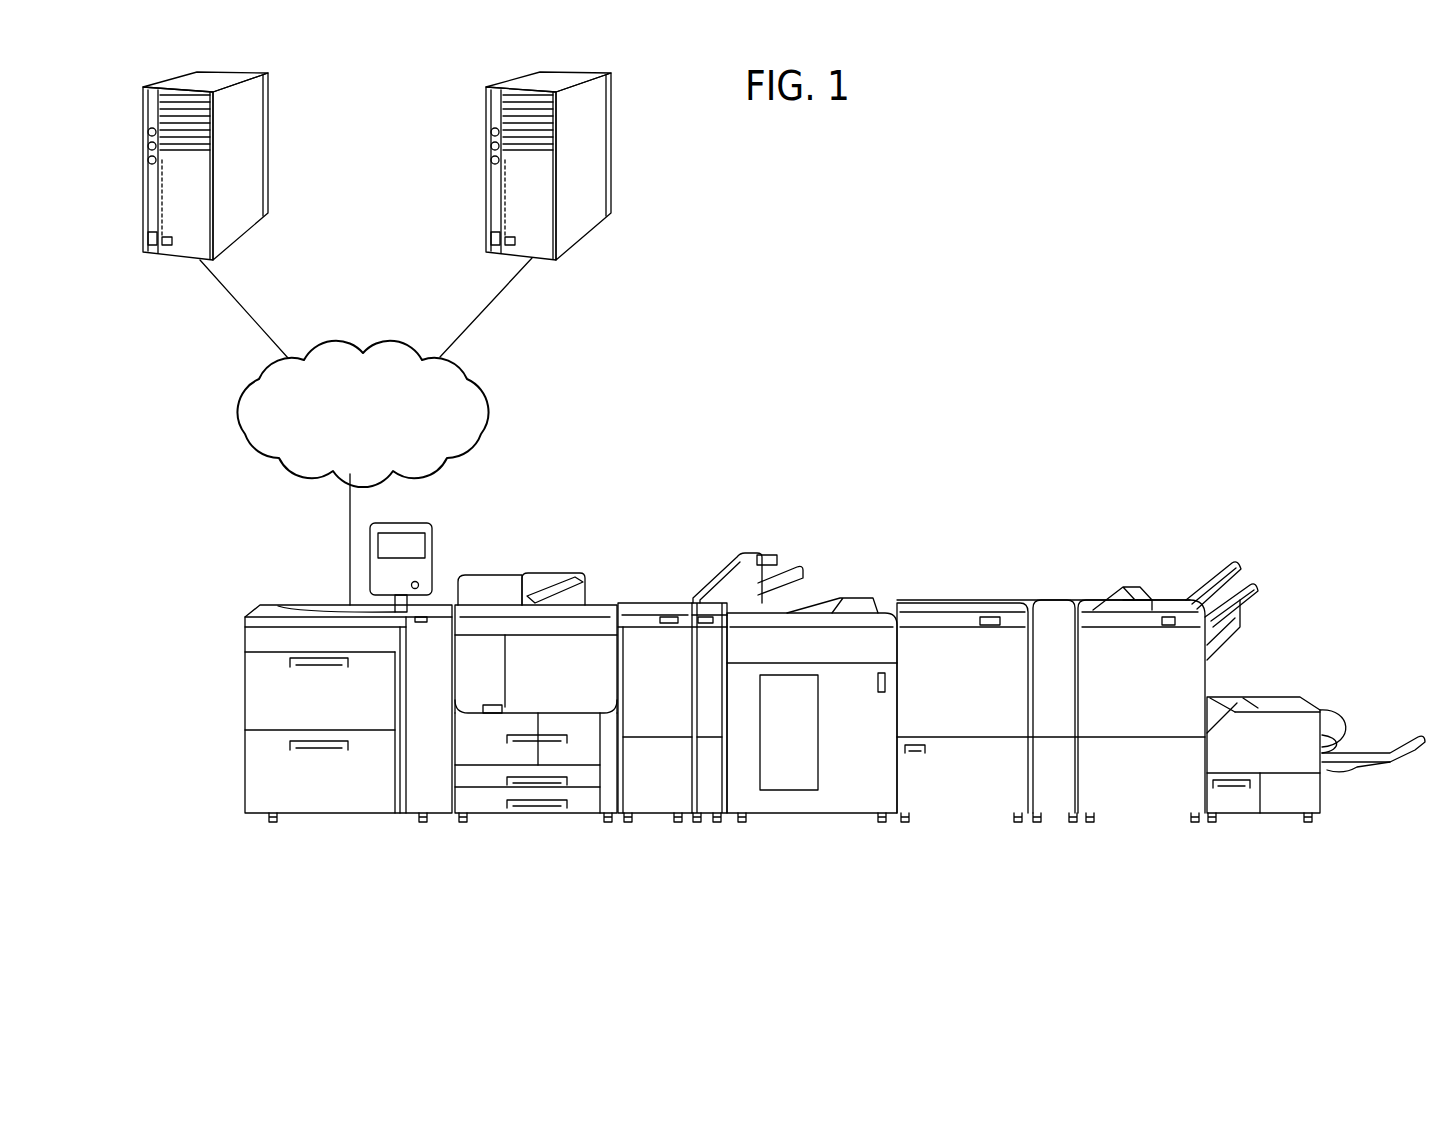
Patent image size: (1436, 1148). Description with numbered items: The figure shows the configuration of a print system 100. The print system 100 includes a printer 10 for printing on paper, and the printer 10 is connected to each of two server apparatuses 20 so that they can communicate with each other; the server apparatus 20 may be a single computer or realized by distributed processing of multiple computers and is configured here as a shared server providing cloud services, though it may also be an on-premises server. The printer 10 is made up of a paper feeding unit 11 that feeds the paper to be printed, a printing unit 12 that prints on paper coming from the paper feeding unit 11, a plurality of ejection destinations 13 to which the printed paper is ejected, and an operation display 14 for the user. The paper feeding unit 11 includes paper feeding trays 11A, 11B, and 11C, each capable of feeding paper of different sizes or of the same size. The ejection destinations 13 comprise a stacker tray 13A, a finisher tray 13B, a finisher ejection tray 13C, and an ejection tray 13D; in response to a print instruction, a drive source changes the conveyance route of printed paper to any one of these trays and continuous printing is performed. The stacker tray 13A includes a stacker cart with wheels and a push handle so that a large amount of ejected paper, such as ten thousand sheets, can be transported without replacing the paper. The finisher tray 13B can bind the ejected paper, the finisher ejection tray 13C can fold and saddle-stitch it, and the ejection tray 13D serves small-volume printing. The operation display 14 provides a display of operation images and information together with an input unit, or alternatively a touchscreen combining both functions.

The print system 100 is at (1128, 440).
The server apparatus 20 is at (270, 120).
The printer 10 is at (262, 555).
The operation display 14 is at (415, 523).
The printing unit 12 is at (602, 602).
The paper feeding unit 11 is at (620, 887).
The paper feeding tray 11A is at (367, 702).
The paper feeding tray 11B is at (557, 748).
The paper feeding tray 11C is at (587, 777).
The ejection destinations 13 is at (1312, 484).
The stacker tray 13A is at (847, 793).
The finisher tray 13B is at (1263, 591).
The finisher ejection tray 13C is at (1392, 740).
The ejection tray 13D is at (1202, 572).